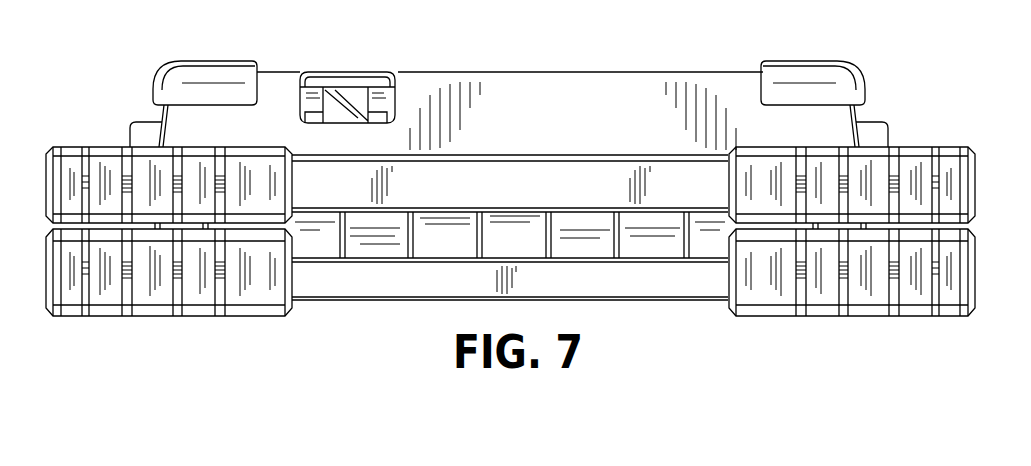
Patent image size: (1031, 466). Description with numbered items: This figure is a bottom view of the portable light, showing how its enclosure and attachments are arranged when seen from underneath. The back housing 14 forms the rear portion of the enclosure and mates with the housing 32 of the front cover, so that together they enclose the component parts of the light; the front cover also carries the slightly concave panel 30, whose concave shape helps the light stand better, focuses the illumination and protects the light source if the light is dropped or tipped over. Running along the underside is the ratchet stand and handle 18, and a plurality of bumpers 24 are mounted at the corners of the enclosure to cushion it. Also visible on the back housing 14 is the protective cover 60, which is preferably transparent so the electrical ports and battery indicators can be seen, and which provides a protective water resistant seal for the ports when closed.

The back housing 14 is at (574, 123).
The ratchet stand and handle 18 is at (519, 195).
The bumpers 24 is at (812, 72).
The slightly concave panel 30 is at (368, 282).
The housing 32 is at (457, 251).
The protective cover 60 is at (347, 62).